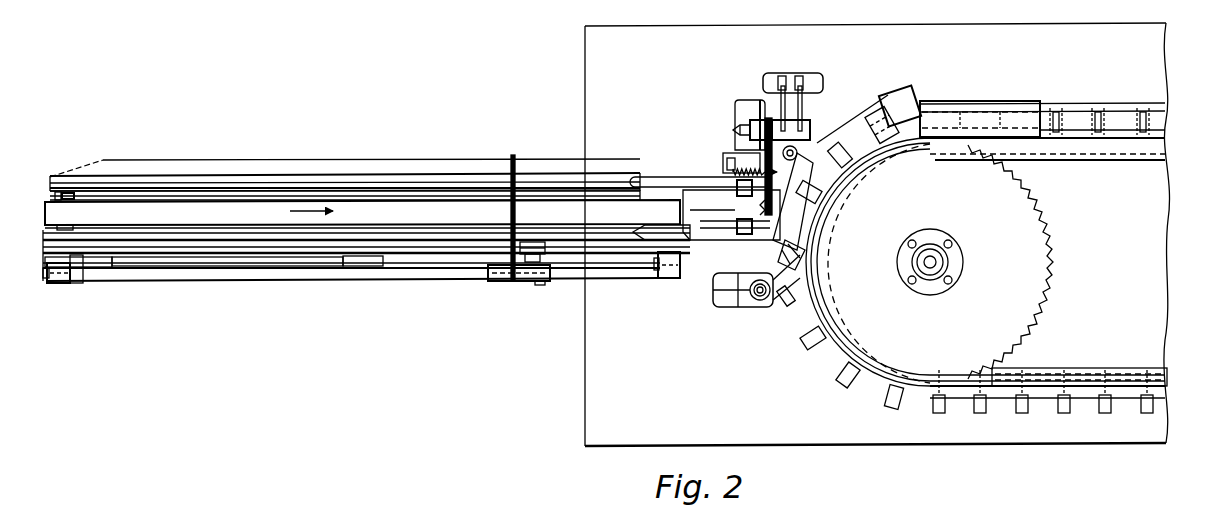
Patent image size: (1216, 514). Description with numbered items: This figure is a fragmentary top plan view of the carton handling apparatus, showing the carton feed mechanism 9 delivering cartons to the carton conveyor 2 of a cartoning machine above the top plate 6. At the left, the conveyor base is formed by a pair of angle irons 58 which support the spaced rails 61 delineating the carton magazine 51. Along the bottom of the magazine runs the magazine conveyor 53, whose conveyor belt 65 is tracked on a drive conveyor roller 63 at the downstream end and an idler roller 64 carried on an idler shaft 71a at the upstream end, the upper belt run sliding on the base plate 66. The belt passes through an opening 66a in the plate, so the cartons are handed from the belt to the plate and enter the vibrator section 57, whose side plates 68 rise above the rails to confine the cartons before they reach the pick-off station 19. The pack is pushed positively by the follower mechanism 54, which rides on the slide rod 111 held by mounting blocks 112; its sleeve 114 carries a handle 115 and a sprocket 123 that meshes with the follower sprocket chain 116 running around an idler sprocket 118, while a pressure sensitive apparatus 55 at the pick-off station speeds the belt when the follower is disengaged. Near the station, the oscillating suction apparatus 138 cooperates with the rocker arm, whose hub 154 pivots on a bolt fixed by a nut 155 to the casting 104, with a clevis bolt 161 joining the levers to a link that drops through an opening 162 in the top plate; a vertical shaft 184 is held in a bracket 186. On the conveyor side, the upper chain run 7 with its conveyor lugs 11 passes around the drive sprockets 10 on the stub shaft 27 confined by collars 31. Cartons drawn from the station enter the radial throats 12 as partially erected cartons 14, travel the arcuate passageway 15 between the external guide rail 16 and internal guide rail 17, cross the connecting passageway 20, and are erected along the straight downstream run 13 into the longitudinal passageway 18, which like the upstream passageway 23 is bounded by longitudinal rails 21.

The carton conveyor 2 is at (1148, 105).
The top plate 6 is at (590, 417).
The upper chain run 7 is at (940, 375).
The carton feed mechanism 9 is at (385, 150).
The drive sprockets 10 is at (1053, 280).
The conveyor lugs 11 is at (812, 350).
The radial throats 12 is at (800, 335).
The straight downstream run 13 is at (985, 150).
The partially erected cartons 14 is at (918, 182).
The arcuate passageway 15 is at (860, 140).
The external guide rail 16 is at (843, 150).
The internal guide rail 17 is at (1080, 150).
The longitudinal passageway 18 is at (1120, 118).
The pick-off station 19 is at (752, 85).
The connecting passageway 20 is at (925, 110).
The longitudinal rails 21 is at (1065, 110).
The upstream passageway 23 is at (1128, 410).
The stub shaft 27 is at (930, 270).
The collars 31 is at (945, 263).
The carton magazine 51 is at (428, 223).
The magazine conveyor 53 is at (395, 212).
The follower mechanism 54 is at (540, 283).
The pressure sensitive apparatus 55 is at (800, 160).
The vibrator section 57 is at (705, 208).
The angle irons 58 is at (127, 178).
The magazine rails 61 is at (568, 182).
The drive conveyor roller 63 is at (645, 180).
The idler roller 64 is at (80, 190).
The conveyor belt 65 is at (185, 208).
The base plate 66 is at (258, 195).
The opening 66a is at (690, 237).
The side plates 68 is at (672, 178).
The idler shaft 71a is at (65, 178).
The casting 104 is at (740, 108).
The slide rod 111 is at (288, 275).
The mounting blocks 112 is at (58, 287).
The sleeve 114 is at (500, 280).
The handle 115 is at (515, 165).
The follower sprocket chain 116 is at (330, 248).
The idler sprocket 118 is at (85, 283).
The sprocket 123 is at (545, 237).
The oscillating suction apparatus 138 is at (778, 310).
The hub 154 is at (790, 125).
The nut 155 is at (752, 127).
The clevis bolt 161 is at (808, 80).
The opening 162 is at (770, 75).
The vertical shaft 184 is at (740, 306).
The bracket 186 is at (720, 303).